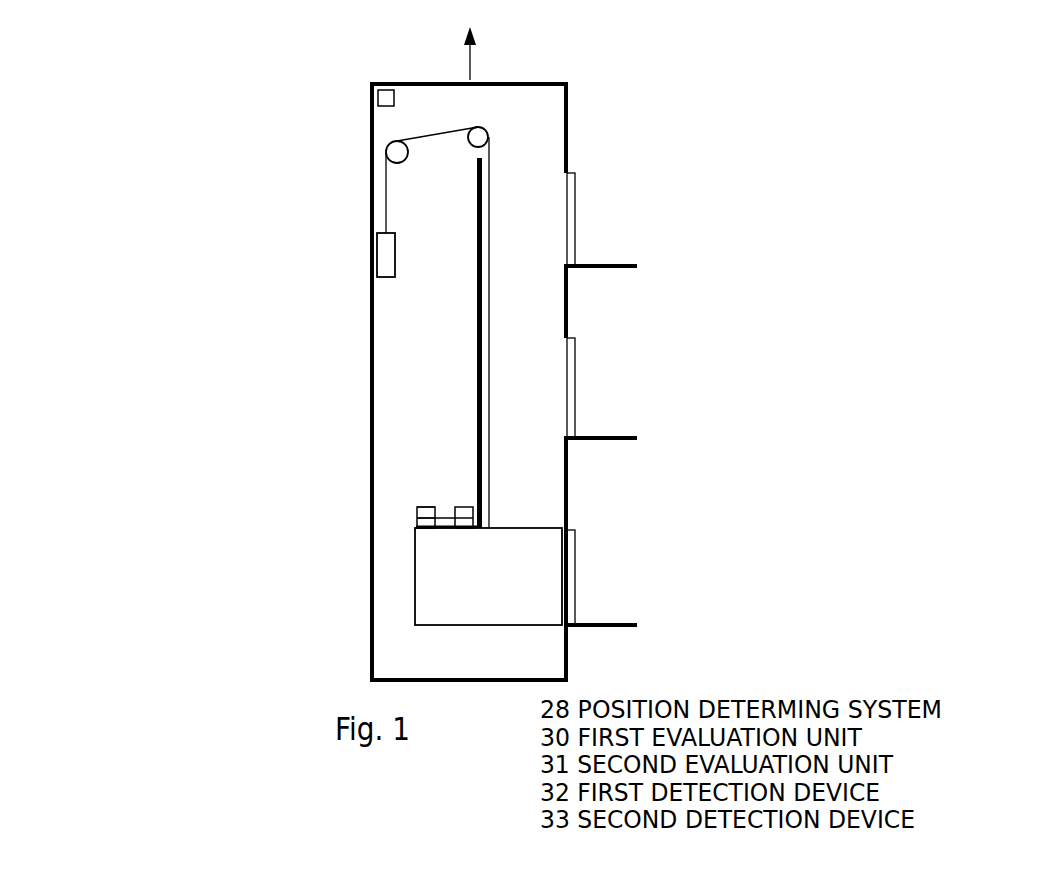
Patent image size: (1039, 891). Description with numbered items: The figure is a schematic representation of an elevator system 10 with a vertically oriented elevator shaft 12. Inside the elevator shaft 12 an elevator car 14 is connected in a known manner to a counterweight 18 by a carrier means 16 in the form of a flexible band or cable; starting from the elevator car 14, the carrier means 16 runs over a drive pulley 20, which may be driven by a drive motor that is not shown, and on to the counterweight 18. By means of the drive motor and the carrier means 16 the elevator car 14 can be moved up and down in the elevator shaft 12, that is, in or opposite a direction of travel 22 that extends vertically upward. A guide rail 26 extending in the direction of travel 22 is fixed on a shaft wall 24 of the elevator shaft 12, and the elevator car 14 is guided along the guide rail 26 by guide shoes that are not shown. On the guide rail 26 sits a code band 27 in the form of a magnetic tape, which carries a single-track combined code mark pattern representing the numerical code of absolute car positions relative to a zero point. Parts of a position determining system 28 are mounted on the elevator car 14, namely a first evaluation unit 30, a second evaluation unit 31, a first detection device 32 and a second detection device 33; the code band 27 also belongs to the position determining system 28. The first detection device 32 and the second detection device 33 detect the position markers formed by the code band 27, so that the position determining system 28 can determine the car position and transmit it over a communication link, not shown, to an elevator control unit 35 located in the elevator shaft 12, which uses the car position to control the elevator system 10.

The elevator system 10 is at (672, 154).
The elevator shaft 12 is at (390, 650).
The elevator car 14 is at (528, 528).
The carrier means 16 is at (492, 163).
The counterweight 18 is at (377, 253).
The drive pulley 20 is at (481, 127).
The direction of travel 22 is at (465, 47).
The shaft wall 24 is at (372, 308).
The guide rail 26 is at (477, 310).
The code band 27 is at (477, 360).
The position determining system 28 is at (410, 491).
The first evaluation unit 30 is at (415, 510).
The second evaluation unit 31 is at (415, 523).
The first detection device 32 is at (457, 506).
The second detection device 33 is at (467, 532).
The elevator control unit 35 is at (372, 92).